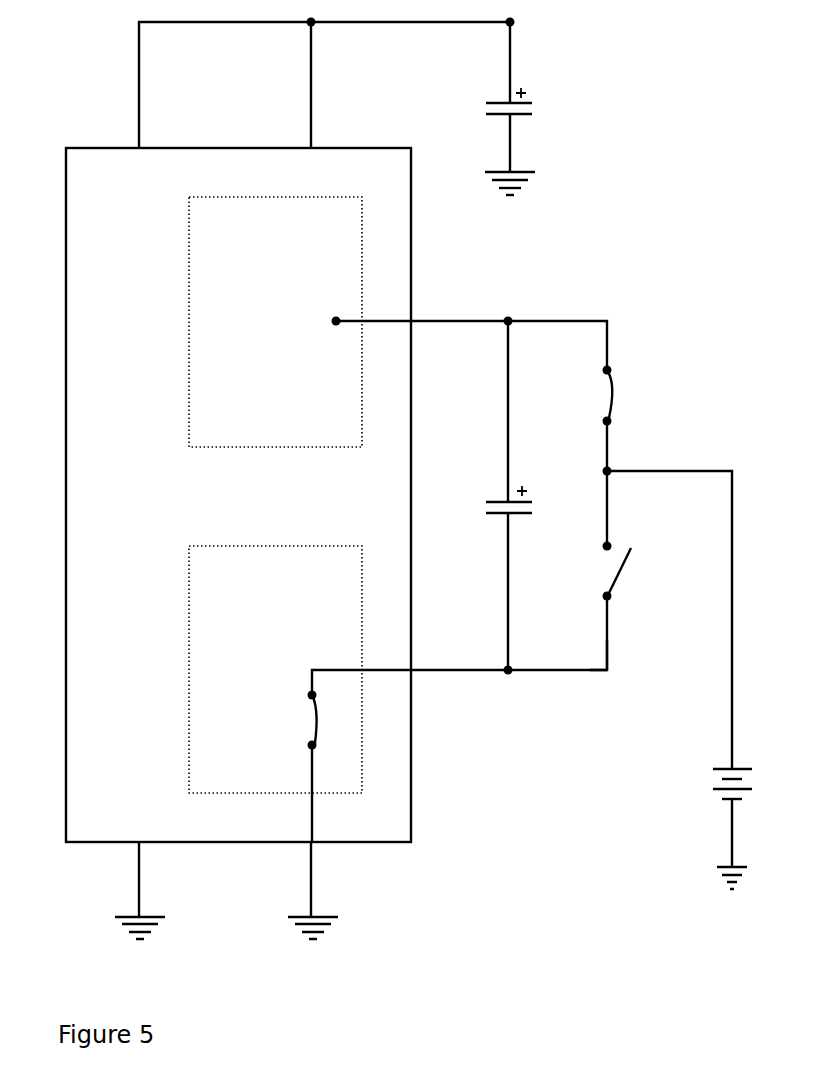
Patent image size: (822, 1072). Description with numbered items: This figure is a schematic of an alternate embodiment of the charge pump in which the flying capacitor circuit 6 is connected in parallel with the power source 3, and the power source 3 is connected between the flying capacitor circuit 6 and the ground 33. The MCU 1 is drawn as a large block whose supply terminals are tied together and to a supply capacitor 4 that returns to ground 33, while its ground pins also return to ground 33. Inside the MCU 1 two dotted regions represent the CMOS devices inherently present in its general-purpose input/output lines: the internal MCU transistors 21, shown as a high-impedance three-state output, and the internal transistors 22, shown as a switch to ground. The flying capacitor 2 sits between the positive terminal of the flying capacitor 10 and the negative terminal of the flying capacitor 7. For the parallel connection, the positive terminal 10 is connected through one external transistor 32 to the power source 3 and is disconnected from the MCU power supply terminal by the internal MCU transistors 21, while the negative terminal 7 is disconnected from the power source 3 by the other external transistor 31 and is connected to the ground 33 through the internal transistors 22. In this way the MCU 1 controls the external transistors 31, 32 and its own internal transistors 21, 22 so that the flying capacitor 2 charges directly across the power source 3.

The MCU 1 is at (76, 146).
The flying capacitor 2 is at (498, 500).
The power source 3 is at (704, 790).
The supply capacitor 4 is at (518, 116).
The flying capacitor circuit 6 is at (614, 682).
The negative terminal of the flying capacitor 7 is at (540, 673).
The positive terminal of the flying capacitor 10 is at (466, 319).
The internal MCU transistors 21 is at (238, 303).
The internal transistors 22 is at (298, 715).
The external transistor 31 is at (605, 566).
The external transistor 32 is at (615, 392).
The ground 33 is at (292, 930).